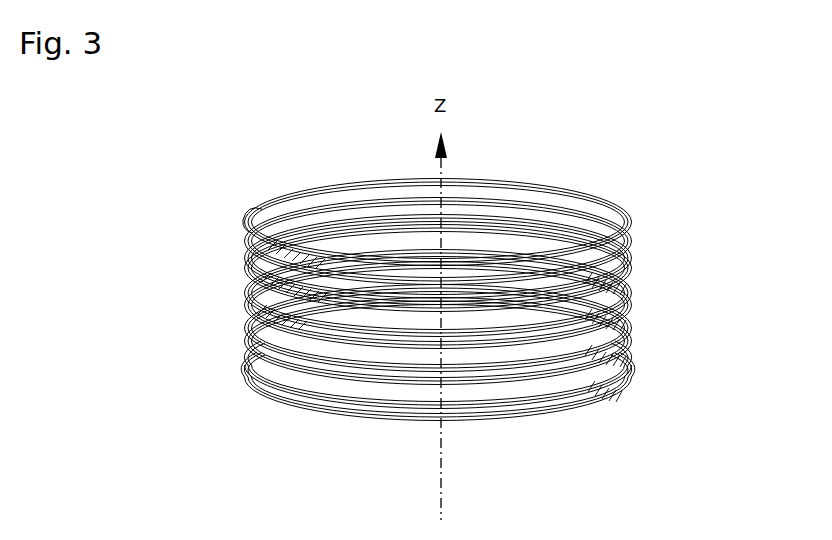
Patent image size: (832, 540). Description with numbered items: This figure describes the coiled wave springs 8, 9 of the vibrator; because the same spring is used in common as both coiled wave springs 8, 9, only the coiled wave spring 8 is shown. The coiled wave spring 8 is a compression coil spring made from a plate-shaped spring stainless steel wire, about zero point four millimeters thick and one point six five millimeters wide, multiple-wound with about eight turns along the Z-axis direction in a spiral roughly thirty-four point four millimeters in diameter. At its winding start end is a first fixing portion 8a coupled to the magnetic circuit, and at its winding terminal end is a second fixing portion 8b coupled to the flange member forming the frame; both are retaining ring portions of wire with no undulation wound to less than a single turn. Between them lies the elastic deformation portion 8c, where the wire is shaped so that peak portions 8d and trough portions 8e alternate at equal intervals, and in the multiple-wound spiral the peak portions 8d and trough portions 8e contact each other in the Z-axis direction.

The coiled wave spring 8 is at (226, 88).
The coiled wave spring 9 is at (501, 265).
The first fixing portion 8a is at (596, 404).
The second fixing portion 8b is at (632, 235).
The elastic deformation portion 8c is at (729, 408).
The peak portions 8d is at (633, 258).
The trough portions 8e is at (633, 279).